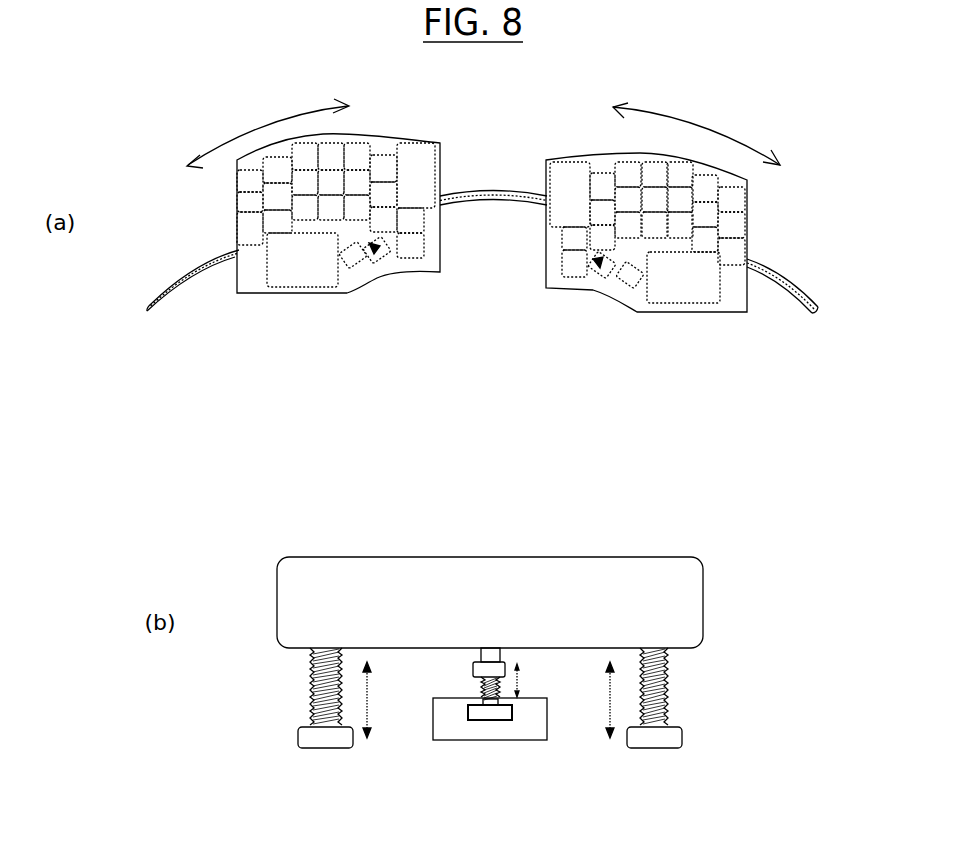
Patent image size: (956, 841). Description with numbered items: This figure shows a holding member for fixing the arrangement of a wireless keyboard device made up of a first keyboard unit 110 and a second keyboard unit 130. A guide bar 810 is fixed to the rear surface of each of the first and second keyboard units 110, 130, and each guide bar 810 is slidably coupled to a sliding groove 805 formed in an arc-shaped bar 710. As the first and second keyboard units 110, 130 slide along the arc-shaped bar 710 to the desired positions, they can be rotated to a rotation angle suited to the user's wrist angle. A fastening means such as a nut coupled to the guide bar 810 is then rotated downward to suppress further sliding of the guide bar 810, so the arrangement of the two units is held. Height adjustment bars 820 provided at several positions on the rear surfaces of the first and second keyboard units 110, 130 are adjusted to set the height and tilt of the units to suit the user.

The first keyboard unit 110 is at (293, 294).
The second keyboard unit 130 is at (695, 313).
The arc-shaped bar 710 is at (492, 191).
The sliding groove 805 is at (788, 288).
The guide bar 810 is at (488, 648).
The height adjustment bar 820 is at (670, 672).